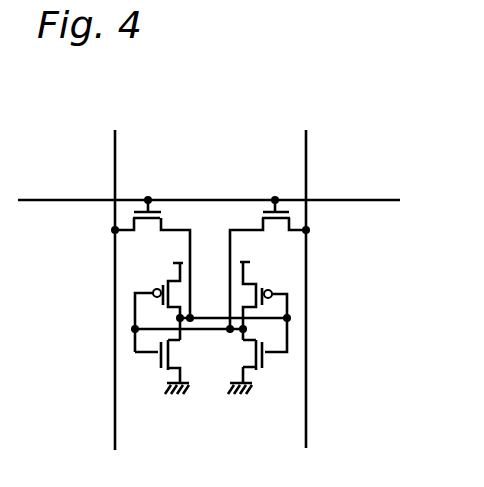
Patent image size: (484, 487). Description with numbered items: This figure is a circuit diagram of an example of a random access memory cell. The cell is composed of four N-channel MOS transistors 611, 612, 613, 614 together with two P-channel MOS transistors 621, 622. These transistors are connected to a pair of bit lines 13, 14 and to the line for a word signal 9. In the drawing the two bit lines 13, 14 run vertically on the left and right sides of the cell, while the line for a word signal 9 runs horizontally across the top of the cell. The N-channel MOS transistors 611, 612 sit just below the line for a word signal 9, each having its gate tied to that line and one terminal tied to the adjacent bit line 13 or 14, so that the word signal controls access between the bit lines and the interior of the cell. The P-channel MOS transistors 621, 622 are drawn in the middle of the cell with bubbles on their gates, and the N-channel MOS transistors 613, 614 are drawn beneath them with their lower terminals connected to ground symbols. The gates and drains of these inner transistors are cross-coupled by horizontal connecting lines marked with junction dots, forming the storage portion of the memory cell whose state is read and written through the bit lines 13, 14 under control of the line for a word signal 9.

The line for a word signal 9 is at (360, 201).
The bit line 13 is at (116, 153).
The bit line 14 is at (307, 153).
The N-channel MOS transistor 611 is at (152, 230).
The N-channel MOS transistor 612 is at (275, 233).
The N-channel MOS transistor 613 is at (152, 360).
The N-channel MOS transistor 614 is at (267, 362).
The P-channel MOS transistor 621 is at (147, 285).
The P-channel MOS transistor 622 is at (275, 289).